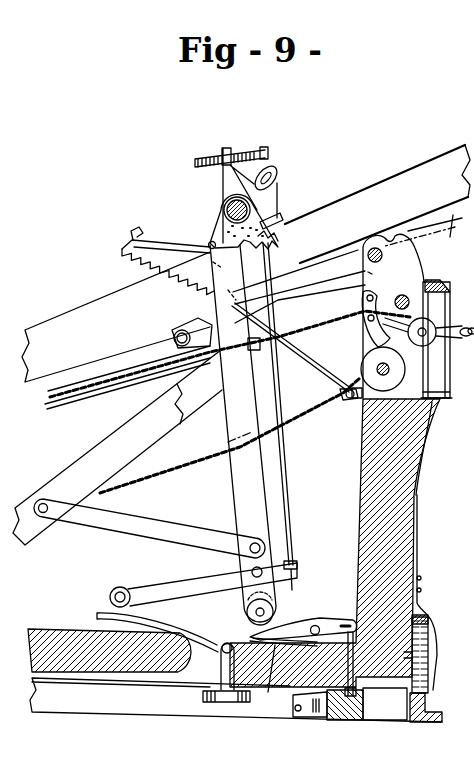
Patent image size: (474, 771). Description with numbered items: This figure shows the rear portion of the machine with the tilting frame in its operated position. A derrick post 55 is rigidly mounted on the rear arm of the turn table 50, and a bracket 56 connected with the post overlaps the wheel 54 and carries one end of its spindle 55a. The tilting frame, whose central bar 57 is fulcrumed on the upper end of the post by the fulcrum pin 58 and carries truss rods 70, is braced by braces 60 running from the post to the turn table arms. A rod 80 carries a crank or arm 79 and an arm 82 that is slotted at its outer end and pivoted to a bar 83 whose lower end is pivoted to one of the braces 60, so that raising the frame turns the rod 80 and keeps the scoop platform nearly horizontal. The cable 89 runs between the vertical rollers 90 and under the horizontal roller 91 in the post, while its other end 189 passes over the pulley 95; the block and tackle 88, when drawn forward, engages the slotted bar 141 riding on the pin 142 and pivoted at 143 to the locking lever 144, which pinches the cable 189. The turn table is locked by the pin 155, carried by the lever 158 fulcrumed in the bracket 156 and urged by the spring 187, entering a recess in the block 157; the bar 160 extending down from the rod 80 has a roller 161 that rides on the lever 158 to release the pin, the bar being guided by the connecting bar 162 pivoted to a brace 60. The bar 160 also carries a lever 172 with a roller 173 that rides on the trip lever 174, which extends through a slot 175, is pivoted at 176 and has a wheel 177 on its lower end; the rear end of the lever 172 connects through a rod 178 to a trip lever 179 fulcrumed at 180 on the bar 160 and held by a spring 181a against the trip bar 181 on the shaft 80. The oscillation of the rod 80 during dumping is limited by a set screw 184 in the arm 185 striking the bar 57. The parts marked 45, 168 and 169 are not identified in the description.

The base rail 45 is at (432, 714).
The turn table 50 is at (59, 634).
The wheel 54 is at (424, 642).
The derrick post 55 is at (420, 466).
The spindle 55a is at (420, 660).
The bracket 56 is at (422, 598).
The central bar 57 is at (347, 208).
The fulcrum pin 58 is at (404, 315).
The braces 60 is at (87, 470).
The truss rods 70 is at (458, 236).
The crank 79 is at (168, 326).
The rod 80 is at (224, 207).
The arm 82 is at (279, 184).
The bar 83 is at (281, 201).
The block and tackle 88 is at (438, 330).
The cable 89 is at (236, 339).
The vertical rollers 90 is at (437, 390).
The horizontal roller 91 is at (403, 294).
The pulley 95 is at (295, 363).
The bar 141 is at (440, 402).
The pin 142 is at (383, 281).
The pivot 143 is at (227, 360).
The locking lever 144 is at (366, 335).
The pin 155 is at (351, 665).
The bracket 156 is at (320, 620).
The block 157 is at (338, 714).
The lever 158 is at (285, 638).
The bar 160 is at (238, 495).
The roller 161 is at (247, 610).
The connecting bar 162 is at (115, 526).
The rail bar 168 is at (302, 274).
The hinge bracket 169 is at (181, 320).
The lever 172 is at (177, 585).
The roller 173 is at (112, 593).
The trip lever 174 is at (149, 620).
The slot 175 is at (211, 666).
The pivot 176 is at (250, 632).
The wheel 177 is at (203, 699).
The rod 178 is at (280, 468).
The trip lever 179 is at (226, 281).
The fulcrum 180 is at (209, 242).
The trip bar 181 is at (262, 229).
The spring 181a is at (157, 267).
The set screw 184 is at (203, 159).
The arm 185 is at (225, 180).
The spring 187 is at (297, 693).
The cable 189 is at (193, 476).